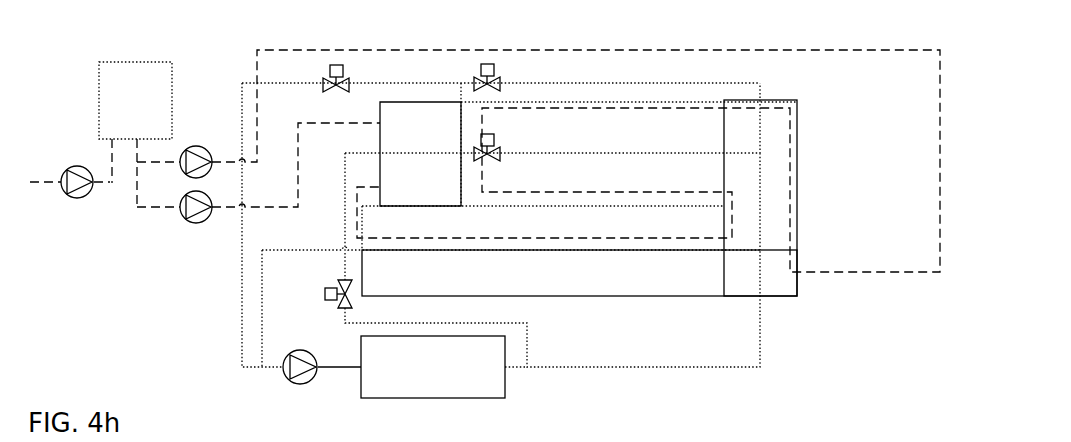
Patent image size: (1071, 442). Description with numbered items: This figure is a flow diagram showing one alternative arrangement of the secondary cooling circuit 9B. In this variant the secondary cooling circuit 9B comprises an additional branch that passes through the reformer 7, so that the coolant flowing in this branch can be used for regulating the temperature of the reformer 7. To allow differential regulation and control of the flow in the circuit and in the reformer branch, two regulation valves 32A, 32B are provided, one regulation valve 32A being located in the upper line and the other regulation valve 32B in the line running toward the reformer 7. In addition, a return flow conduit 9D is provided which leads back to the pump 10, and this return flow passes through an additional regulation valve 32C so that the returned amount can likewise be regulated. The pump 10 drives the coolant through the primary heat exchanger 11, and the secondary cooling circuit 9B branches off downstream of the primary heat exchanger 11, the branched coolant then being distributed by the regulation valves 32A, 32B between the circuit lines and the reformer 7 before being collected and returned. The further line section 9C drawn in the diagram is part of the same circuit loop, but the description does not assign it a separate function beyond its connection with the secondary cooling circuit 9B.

The regulation valve 32C is at (337, 66).
The regulation valve 32A is at (502, 72).
The regulation valve 32B is at (502, 142).
The return flow conduit 9D is at (393, 80).
The coolant circuit 9C is at (677, 152).
The secondary cooling circuit 9B is at (527, 352).
The reformer 7 is at (660, 146).
The pump 10 is at (294, 350).
The primary heat exchanger 11 is at (400, 371).